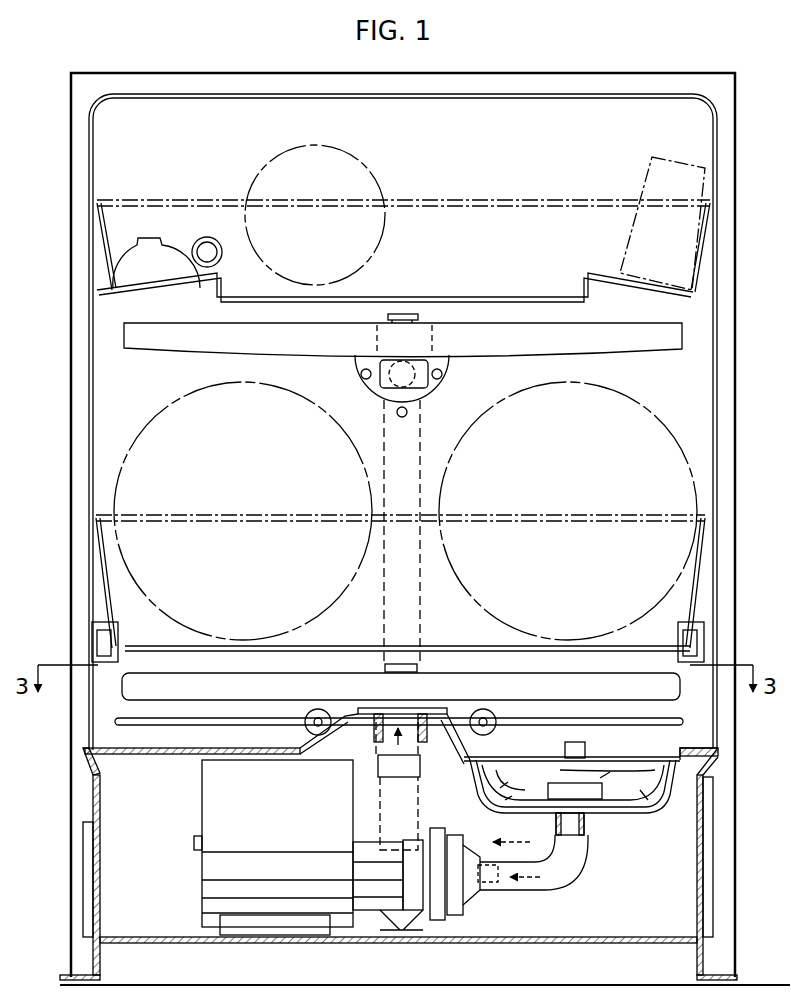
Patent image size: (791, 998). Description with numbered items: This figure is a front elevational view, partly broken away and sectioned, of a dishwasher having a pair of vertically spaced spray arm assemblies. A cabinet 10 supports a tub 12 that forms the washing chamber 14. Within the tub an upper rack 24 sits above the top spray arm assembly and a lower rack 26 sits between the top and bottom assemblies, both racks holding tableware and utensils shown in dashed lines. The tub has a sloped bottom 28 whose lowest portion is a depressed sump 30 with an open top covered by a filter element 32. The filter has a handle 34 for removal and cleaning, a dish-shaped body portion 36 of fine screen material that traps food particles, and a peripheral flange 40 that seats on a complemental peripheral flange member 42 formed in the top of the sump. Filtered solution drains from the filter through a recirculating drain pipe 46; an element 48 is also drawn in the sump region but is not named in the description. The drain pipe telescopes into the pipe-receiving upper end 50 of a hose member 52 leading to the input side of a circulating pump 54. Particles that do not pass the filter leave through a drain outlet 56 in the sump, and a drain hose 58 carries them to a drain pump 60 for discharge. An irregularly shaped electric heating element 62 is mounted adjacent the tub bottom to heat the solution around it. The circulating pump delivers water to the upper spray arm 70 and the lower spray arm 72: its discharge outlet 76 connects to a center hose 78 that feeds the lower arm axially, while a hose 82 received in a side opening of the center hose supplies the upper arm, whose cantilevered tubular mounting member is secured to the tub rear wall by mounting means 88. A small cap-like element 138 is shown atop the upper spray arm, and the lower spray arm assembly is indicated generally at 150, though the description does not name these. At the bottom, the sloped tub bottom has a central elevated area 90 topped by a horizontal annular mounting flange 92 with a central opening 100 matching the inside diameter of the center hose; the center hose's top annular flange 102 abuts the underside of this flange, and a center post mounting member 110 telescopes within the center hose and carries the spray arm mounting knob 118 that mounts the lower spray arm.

The cabinet 10 is at (682, 64).
The tub 12 is at (718, 154).
The washing chamber 14 is at (474, 159).
The upper rack 24 is at (598, 205).
The lower rack 26 is at (549, 520).
The sloped bottom 28 is at (258, 755).
The sump 30 is at (655, 816).
The filter element 32 is at (600, 752).
The handle 34 is at (575, 742).
The dish-shaped body portion 36 is at (625, 802).
The peripheral flange 40 is at (676, 750).
The peripheral flange member 42 is at (668, 790).
The recirculating drain pipe 46 is at (575, 784).
The drain outlet 48 is at (610, 820).
The pipe-receiving upper end 50 is at (552, 822).
The hose member 52 is at (482, 790).
The circulating pump 54 is at (199, 808).
The drain outlet 56 is at (548, 834).
The drain hose 58 is at (568, 872).
The drain pump 60 is at (472, 906).
The electric heating element 62 is at (178, 726).
The upper spray arm 70 is at (481, 321).
The lower spray arm 72 is at (450, 671).
The discharge outlet 76 is at (388, 803).
The center hose 78 is at (360, 772).
The hose 82 is at (416, 456).
The mounting means 88 is at (443, 374).
The central elevated area 90 is at (318, 708).
The annular mounting flange 92 is at (449, 712).
The central opening 100 is at (388, 712).
The top annular flange 102 is at (374, 734).
The center post mounting member 110 is at (366, 707).
The spray arm mounting knob 118 is at (412, 663).
The cap 138 is at (407, 314).
The spray arm assembly 150 is at (586, 671).